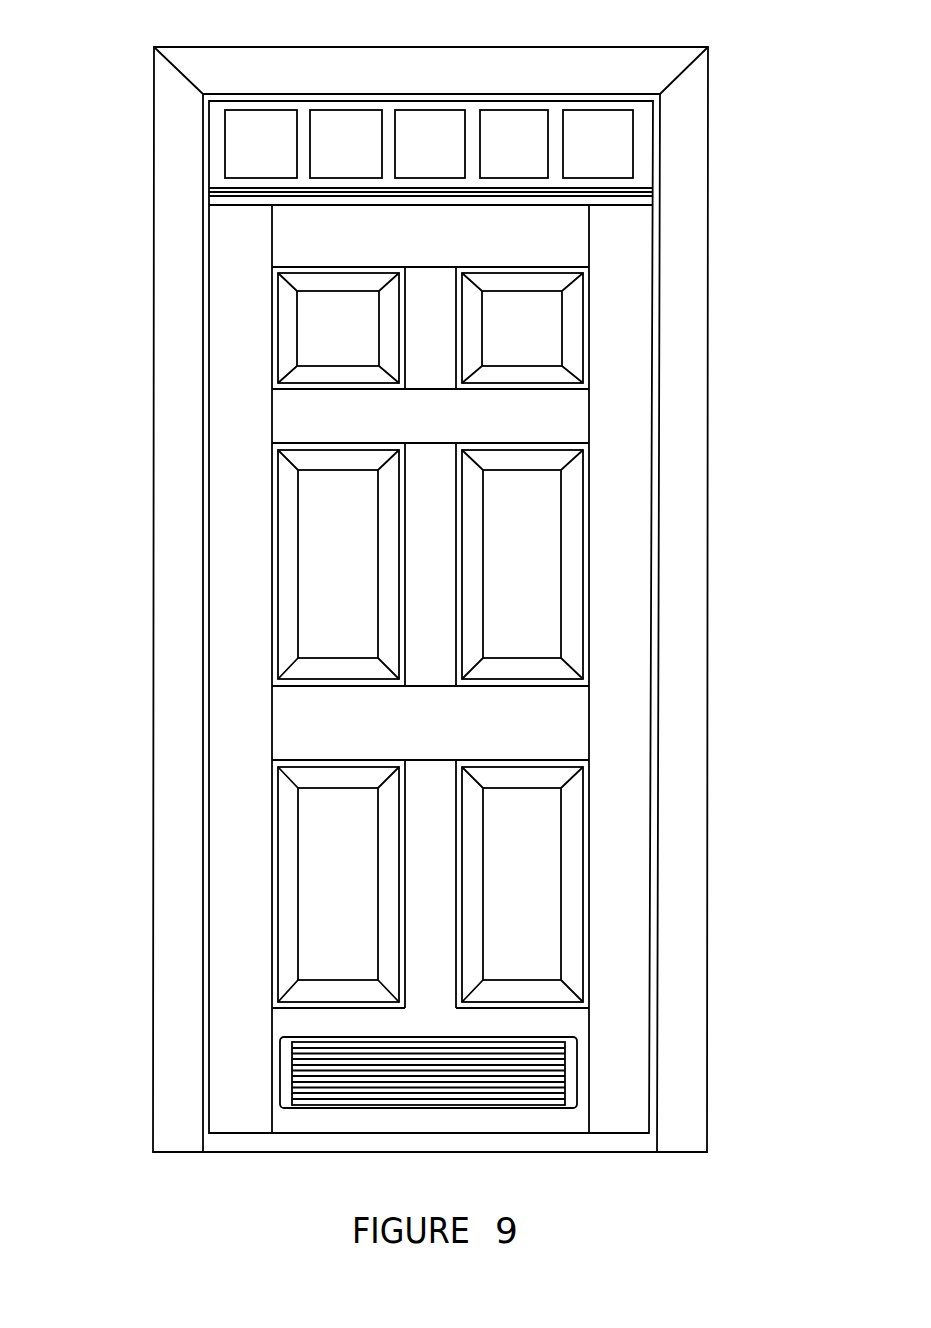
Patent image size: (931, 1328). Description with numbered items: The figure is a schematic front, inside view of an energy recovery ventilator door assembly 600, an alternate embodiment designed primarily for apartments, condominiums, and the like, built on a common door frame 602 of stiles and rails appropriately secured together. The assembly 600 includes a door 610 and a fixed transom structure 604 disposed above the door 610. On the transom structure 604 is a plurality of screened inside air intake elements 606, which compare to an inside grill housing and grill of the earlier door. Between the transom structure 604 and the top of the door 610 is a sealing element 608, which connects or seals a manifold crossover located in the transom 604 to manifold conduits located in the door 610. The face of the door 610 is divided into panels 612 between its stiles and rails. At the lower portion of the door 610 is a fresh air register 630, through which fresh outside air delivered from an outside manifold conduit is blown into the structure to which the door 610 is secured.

The energy recovery ventilator door assembly 600 is at (132, 138).
The door frame 602 is at (182, 238).
The transom structure 604 is at (387, 105).
The screened inside air intake elements 606 is at (343, 118).
The sealing element 608 is at (632, 188).
The door 610 is at (627, 413).
The door panels 612 is at (315, 525).
The fresh air register 630 is at (537, 1092).